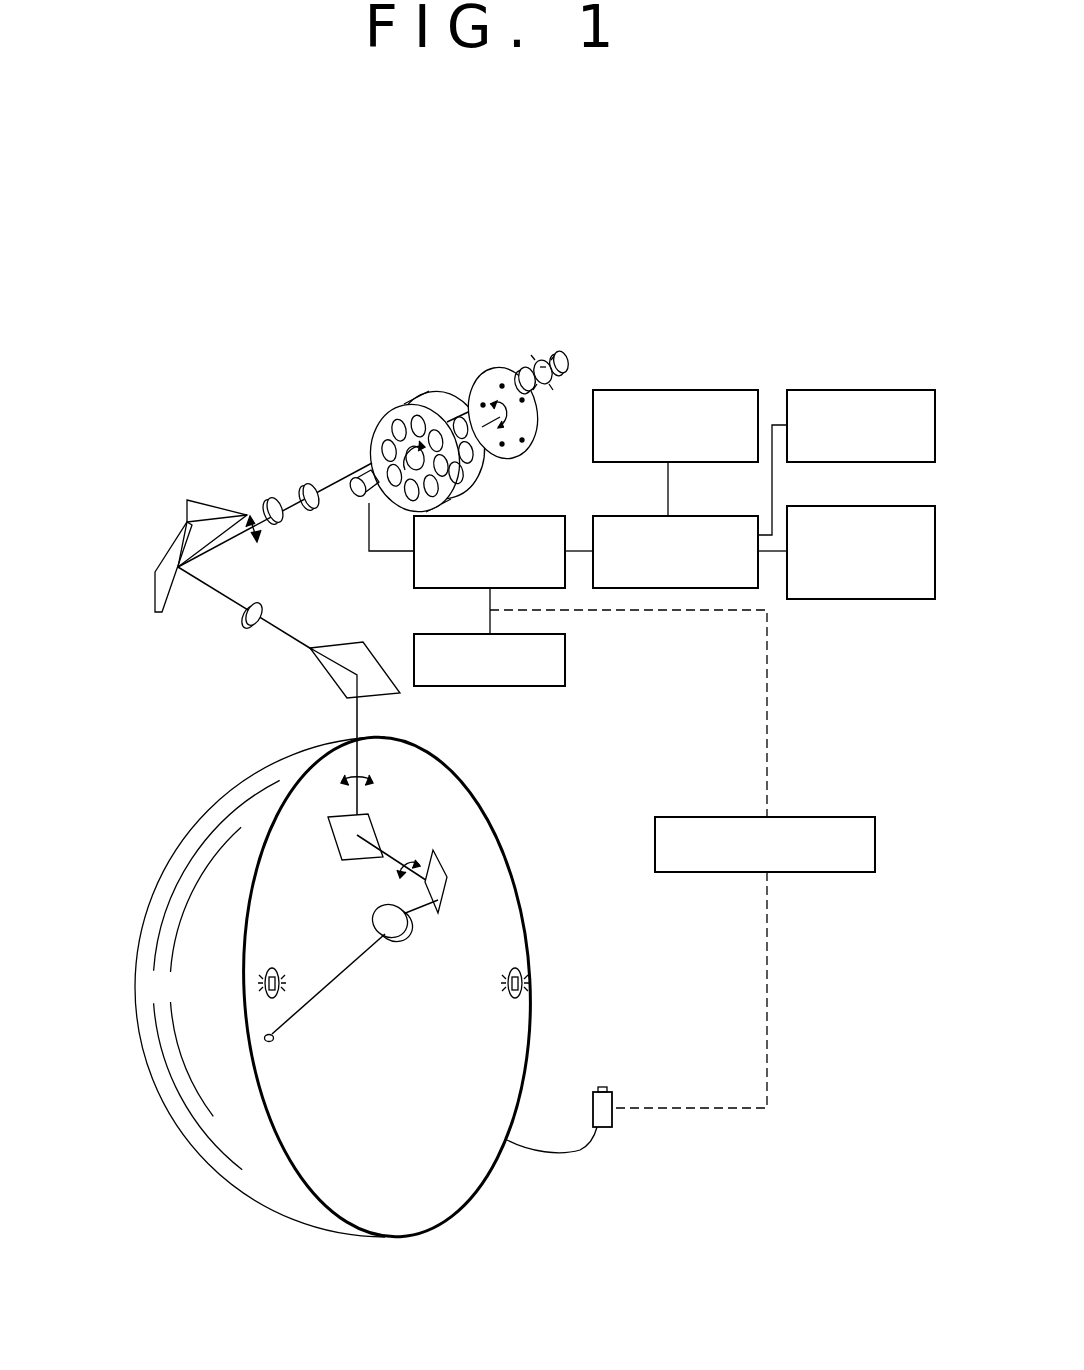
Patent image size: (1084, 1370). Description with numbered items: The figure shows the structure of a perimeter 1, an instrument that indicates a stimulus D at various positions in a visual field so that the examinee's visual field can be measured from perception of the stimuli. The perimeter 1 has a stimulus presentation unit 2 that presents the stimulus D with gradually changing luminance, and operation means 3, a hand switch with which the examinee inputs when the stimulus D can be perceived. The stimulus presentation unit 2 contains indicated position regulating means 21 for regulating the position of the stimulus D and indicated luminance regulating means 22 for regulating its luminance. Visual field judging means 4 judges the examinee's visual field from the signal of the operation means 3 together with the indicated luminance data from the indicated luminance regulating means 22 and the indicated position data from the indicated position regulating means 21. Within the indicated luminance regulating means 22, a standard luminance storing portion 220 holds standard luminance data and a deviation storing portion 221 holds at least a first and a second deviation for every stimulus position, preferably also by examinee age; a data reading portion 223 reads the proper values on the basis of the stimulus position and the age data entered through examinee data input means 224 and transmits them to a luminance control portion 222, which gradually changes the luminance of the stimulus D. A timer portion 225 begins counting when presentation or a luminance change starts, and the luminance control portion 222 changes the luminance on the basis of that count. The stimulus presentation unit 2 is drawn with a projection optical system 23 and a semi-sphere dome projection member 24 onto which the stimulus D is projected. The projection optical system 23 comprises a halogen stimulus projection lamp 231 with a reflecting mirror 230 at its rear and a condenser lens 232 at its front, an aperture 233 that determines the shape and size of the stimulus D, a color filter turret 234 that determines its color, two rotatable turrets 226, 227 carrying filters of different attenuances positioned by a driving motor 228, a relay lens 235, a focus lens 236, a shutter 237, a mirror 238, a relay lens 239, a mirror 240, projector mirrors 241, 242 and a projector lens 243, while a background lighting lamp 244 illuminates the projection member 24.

The perimeter 1 is at (606, 215).
The stimulus presentation unit 2 is at (680, 705).
The indicated position regulating means 21 is at (565, 733).
The indicated luminance regulating means 22 is at (594, 652).
The projection optical system 23 is at (300, 230).
The projection member 24 is at (440, 746).
The operation means 3 is at (612, 1115).
The visual field judging means 4 is at (852, 817).
The standard luminance storing portion 220 is at (896, 506).
The deviation storing portion 221 is at (898, 390).
The luminance control portion 222 is at (526, 516).
The data reading portion 223 is at (710, 516).
The examinee data input means 224 is at (708, 390).
The timer portion 225 is at (434, 634).
The turret 226 is at (377, 436).
The turret 227 is at (403, 413).
The driving motor 228 is at (357, 500).
The reflecting mirror 230 is at (566, 358).
The stimulus projection lamp 231 is at (540, 357).
The condenser lens 232 is at (520, 370).
The aperture 233 is at (497, 370).
The color filter turret 234 is at (440, 407).
The relay lens 235 is at (312, 510).
The focus lens 236 is at (273, 503).
The shutter 237 is at (188, 505).
The mirror 238 is at (168, 598).
The relay lens 239 is at (252, 625).
The mirror 240 is at (338, 643).
The projector mirror 241 is at (352, 838).
The projector mirror 242 is at (448, 866).
The projector lens 243 is at (410, 935).
The background lighting lamp 244 is at (270, 975).
The stimulus D is at (274, 1042).